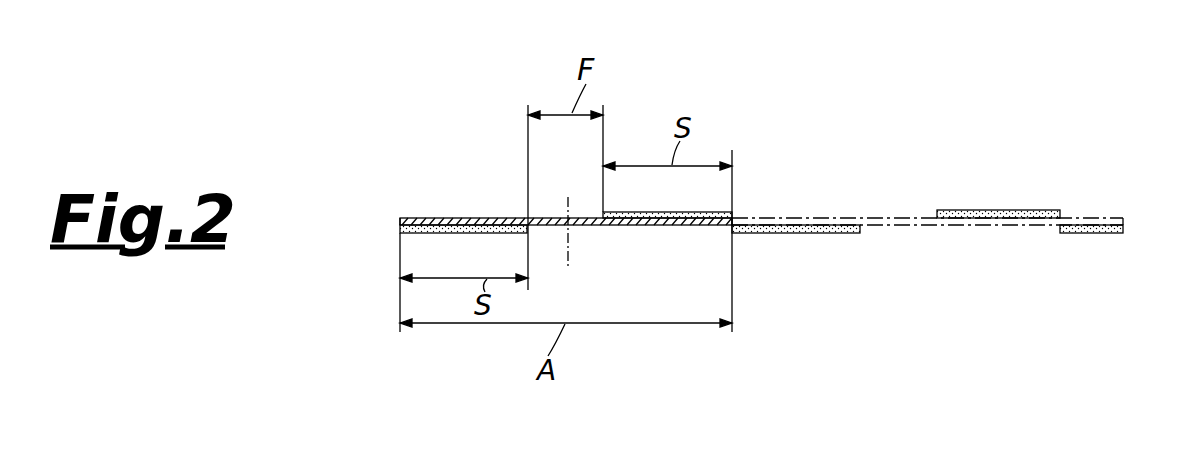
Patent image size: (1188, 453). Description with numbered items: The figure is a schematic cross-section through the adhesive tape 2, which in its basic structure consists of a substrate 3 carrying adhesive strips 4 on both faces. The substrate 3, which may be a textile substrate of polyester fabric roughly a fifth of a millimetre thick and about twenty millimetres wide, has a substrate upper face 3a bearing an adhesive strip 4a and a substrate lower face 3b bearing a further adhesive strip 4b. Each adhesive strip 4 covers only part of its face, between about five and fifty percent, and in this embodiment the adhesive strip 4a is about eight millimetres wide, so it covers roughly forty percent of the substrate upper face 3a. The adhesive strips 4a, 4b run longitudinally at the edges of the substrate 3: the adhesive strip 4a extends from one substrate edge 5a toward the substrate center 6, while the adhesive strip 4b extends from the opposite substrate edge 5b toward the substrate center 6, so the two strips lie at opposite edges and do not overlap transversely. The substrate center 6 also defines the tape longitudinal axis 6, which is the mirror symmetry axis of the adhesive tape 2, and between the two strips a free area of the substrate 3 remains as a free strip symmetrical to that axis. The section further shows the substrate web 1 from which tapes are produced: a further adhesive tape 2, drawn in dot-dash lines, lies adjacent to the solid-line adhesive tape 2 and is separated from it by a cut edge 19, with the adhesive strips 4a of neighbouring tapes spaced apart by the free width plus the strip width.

The substrate web 1 is at (920, 232).
The adhesive tape 2 is at (739, 92).
The substrate 3 is at (612, 226).
The substrate upper face 3a is at (430, 208).
The substrate lower face 3b is at (688, 233).
The adhesive strip 4 is at (419, 243).
The adhesive strip on substrate upper face 4a is at (655, 226).
The adhesive strip on substrate lower face 4b is at (464, 224).
The substrate edge 5a is at (388, 225).
The substrate edge 5b is at (744, 216).
The substrate center / tape longitudinal axis 6 is at (568, 191).
The cut edge 19 is at (737, 292).